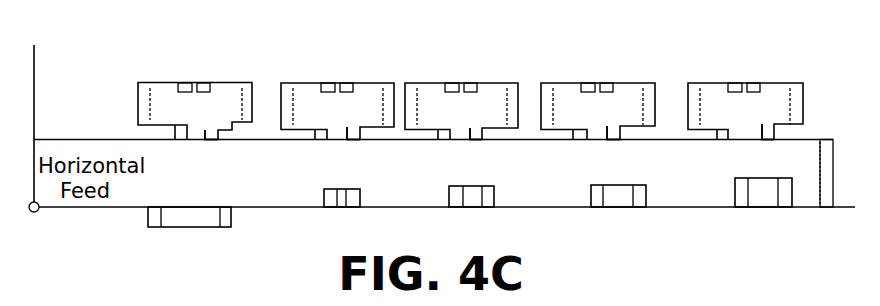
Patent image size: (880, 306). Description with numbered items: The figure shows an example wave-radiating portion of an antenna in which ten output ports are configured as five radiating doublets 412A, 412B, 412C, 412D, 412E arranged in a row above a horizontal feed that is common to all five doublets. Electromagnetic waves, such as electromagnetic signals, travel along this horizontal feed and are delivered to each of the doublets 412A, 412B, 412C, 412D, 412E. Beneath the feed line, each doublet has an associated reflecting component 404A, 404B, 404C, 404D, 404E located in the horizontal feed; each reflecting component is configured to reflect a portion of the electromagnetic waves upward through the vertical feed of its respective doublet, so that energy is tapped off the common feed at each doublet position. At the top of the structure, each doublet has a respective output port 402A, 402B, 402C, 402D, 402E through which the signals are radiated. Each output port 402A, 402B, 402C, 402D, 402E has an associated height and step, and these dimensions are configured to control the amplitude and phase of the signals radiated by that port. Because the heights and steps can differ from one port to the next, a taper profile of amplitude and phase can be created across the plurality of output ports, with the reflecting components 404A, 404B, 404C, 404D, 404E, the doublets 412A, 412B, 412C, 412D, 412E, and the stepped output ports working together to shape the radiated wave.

The output port 402A is at (163, 88).
The output port 402B is at (306, 88).
The output port 402C is at (430, 88).
The output port 402D is at (566, 88).
The output port 402E is at (713, 88).
The radiating doublet 412A is at (215, 110).
The radiating doublet 412B is at (348, 117).
The radiating doublet 412C is at (483, 110).
The radiating doublet 412D is at (607, 108).
The radiating doublet 412E is at (758, 108).
The reflecting component 404A is at (200, 217).
The reflecting component 404B is at (341, 198).
The reflecting component 404C is at (470, 200).
The reflecting component 404D is at (622, 198).
The reflecting component 404E is at (763, 200).